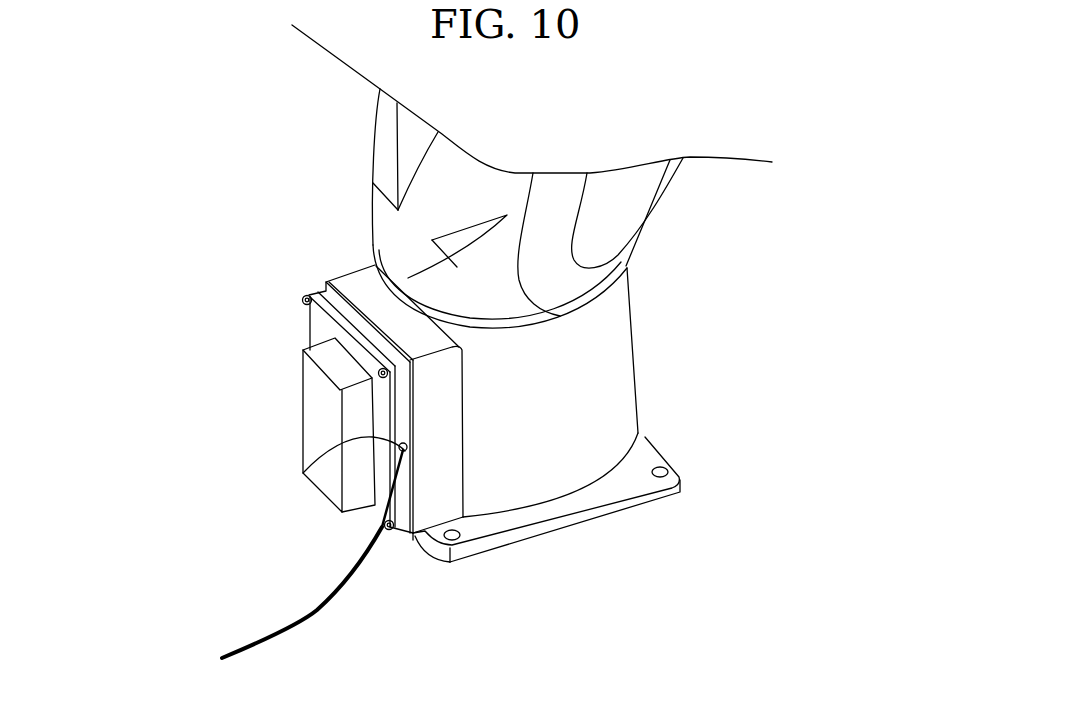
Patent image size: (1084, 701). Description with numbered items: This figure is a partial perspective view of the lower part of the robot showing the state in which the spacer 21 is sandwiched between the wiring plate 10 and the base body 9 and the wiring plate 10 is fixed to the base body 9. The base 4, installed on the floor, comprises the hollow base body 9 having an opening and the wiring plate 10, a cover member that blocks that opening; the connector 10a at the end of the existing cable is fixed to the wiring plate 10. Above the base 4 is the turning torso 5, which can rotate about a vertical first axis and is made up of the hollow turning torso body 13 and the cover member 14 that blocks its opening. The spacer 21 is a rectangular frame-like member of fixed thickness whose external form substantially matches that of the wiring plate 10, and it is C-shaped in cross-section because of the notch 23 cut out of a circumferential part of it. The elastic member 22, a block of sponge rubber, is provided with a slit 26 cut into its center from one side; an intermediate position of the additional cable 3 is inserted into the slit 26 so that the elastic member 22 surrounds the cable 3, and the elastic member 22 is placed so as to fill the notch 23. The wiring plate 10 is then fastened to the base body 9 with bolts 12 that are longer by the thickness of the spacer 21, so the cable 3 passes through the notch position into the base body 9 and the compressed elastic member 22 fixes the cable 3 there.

The cable 3 is at (297, 624).
The base 4 is at (580, 526).
The turning torso 5 is at (372, 157).
The base body 9 is at (603, 422).
The wiring plate 10 is at (320, 328).
The connector 10a is at (313, 415).
The bolts 12 is at (302, 299).
The turning torso body 13 is at (423, 207).
The cover member 14 is at (622, 235).
The spacer 21 is at (400, 528).
The elastic member 22 is at (413, 430).
The notch 23 is at (408, 455).
The slit 26 is at (302, 474).